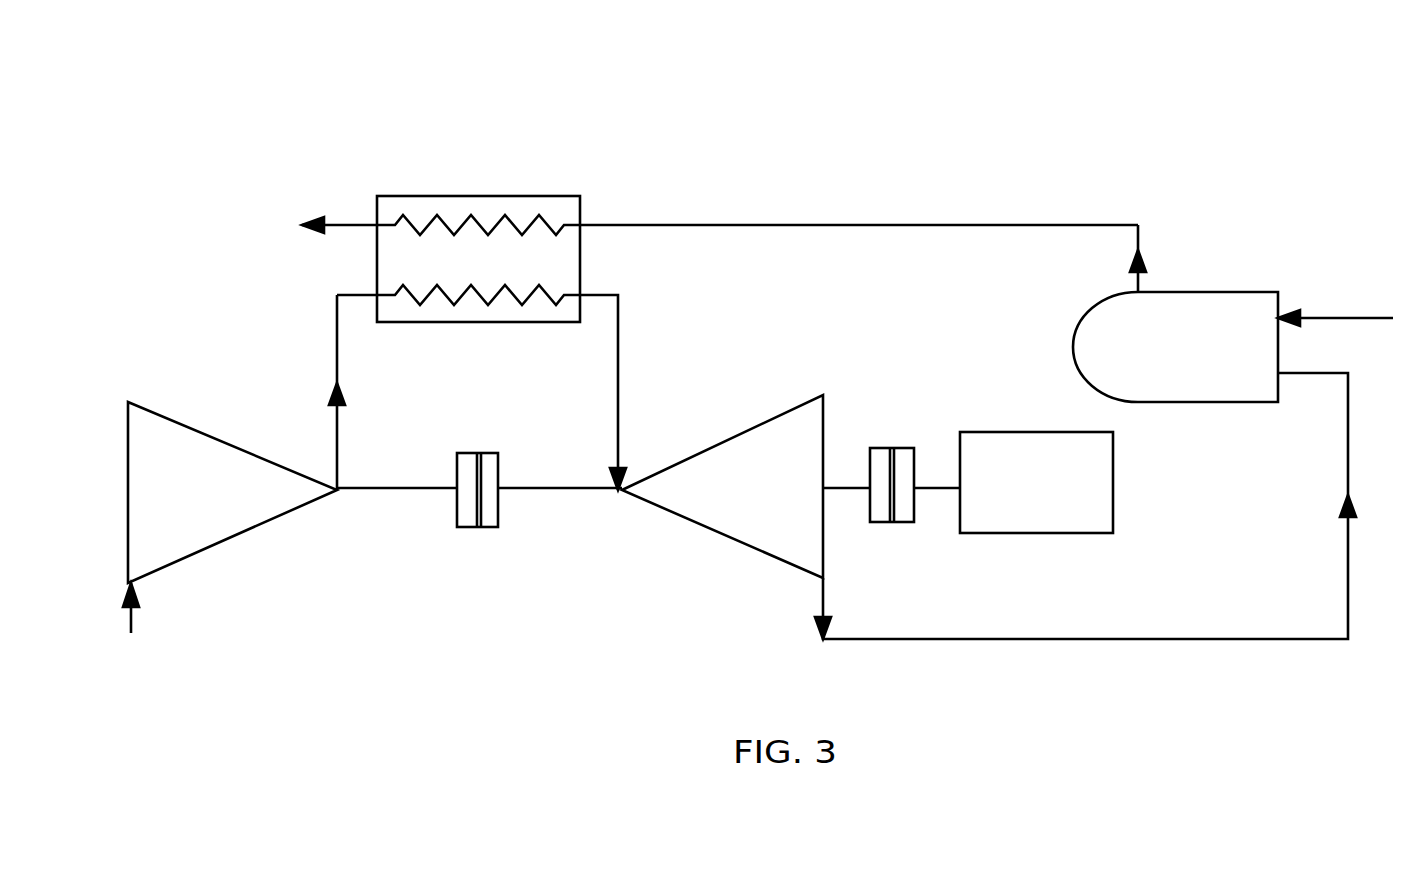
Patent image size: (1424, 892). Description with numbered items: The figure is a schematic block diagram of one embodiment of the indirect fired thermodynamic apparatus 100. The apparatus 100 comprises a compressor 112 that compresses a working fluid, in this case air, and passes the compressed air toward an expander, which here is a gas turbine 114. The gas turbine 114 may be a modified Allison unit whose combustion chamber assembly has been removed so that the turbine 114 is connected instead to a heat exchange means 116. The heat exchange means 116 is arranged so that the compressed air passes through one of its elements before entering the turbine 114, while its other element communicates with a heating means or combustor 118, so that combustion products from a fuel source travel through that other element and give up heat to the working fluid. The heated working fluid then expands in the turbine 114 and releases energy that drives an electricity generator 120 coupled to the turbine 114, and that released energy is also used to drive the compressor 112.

The indirect fired thermodynamic apparatus 100 is at (1250, 145).
The compressor 112 is at (277, 520).
The gas turbine 114 is at (732, 540).
The heat exchange means 116 is at (582, 210).
The combustor 118 is at (1223, 292).
The electricity generator 120 is at (1085, 533).